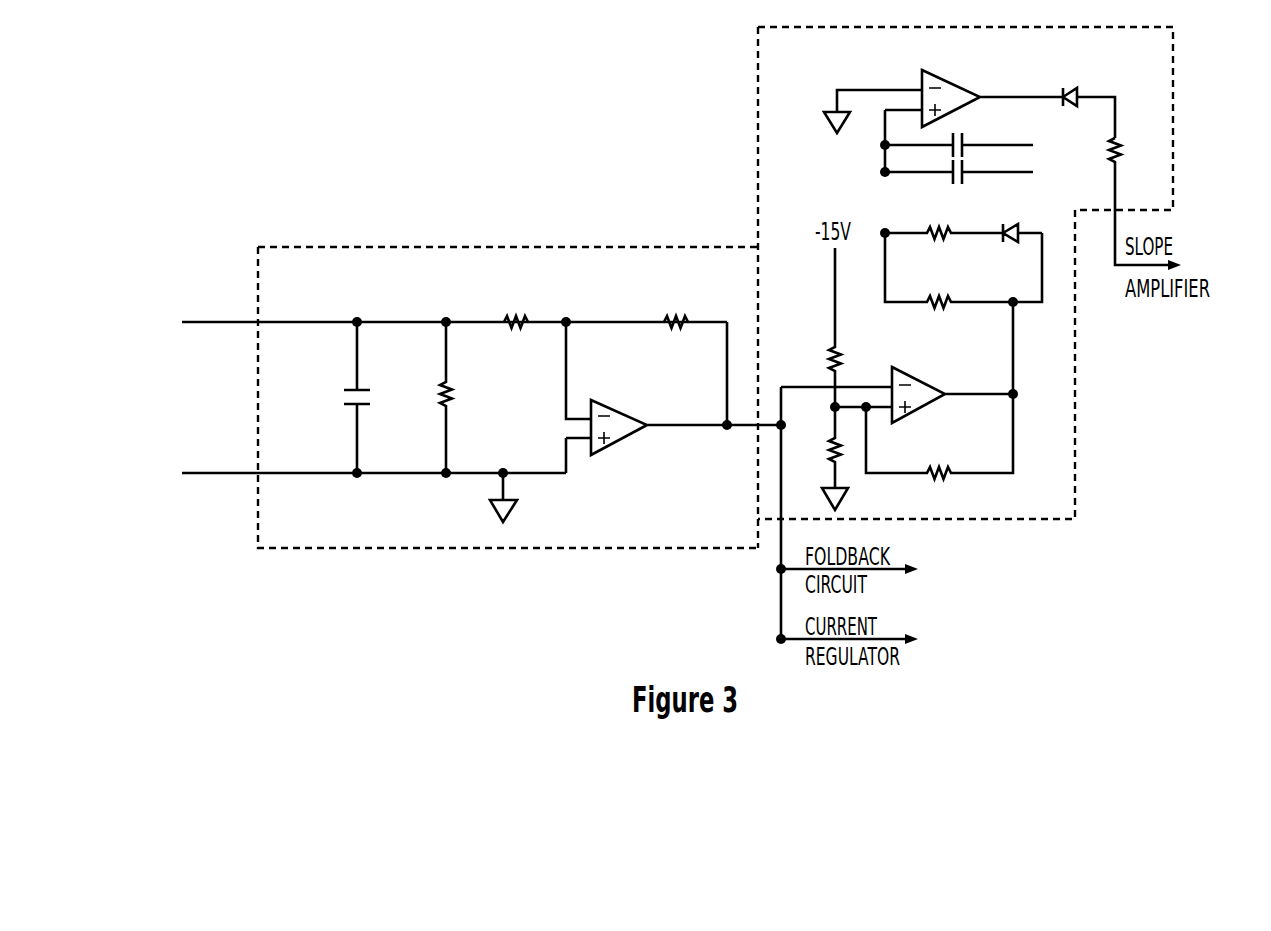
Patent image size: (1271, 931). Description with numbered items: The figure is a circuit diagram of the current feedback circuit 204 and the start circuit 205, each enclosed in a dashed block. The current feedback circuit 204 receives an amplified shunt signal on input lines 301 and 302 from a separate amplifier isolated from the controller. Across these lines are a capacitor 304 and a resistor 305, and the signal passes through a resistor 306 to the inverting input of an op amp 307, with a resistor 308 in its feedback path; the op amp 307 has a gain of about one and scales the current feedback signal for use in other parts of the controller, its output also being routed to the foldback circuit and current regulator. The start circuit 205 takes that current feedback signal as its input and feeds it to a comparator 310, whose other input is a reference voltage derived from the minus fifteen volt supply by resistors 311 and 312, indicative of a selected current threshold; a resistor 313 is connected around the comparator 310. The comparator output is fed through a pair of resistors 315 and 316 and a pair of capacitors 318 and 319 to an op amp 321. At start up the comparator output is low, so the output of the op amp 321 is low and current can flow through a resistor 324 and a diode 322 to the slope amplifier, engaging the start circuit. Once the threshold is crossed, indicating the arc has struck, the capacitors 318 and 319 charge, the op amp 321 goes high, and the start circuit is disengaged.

The current feedback circuit 204 is at (378, 549).
The start circuit 205 is at (1007, 519).
The input line 301 is at (280, 322).
The input line 302 is at (285, 473).
The capacitor 304 is at (372, 398).
The resistor 305 is at (455, 393).
The resistor 306 is at (522, 312).
The op amp 307 is at (637, 415).
The resistor 308 is at (680, 312).
The comparator 310 is at (937, 380).
The resistor 311 is at (832, 347).
The resistor 312 is at (832, 445).
The resistor 313 is at (947, 463).
The resistor 315 is at (947, 297).
The resistor 316 is at (947, 230).
The capacitor 318 is at (967, 140).
The capacitor 319 is at (967, 178).
The op amp 321 is at (967, 87).
The diode 322 is at (1080, 90).
The resistor 324 is at (1123, 147).